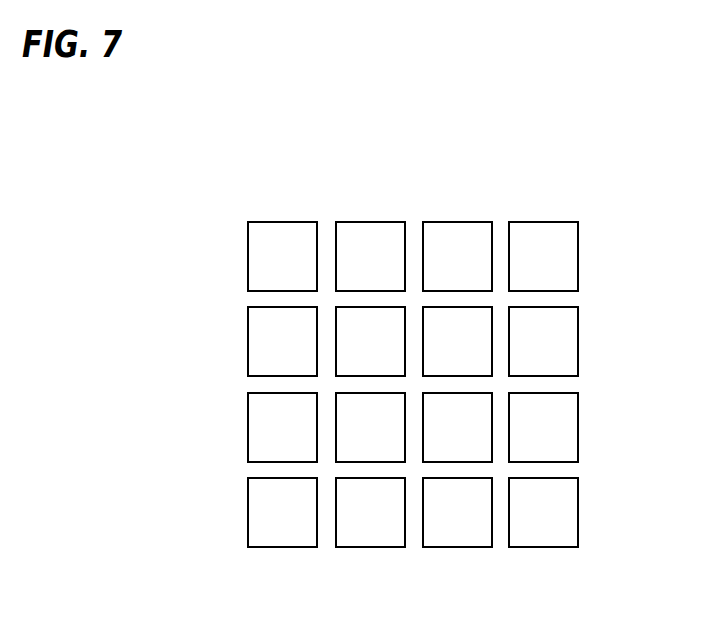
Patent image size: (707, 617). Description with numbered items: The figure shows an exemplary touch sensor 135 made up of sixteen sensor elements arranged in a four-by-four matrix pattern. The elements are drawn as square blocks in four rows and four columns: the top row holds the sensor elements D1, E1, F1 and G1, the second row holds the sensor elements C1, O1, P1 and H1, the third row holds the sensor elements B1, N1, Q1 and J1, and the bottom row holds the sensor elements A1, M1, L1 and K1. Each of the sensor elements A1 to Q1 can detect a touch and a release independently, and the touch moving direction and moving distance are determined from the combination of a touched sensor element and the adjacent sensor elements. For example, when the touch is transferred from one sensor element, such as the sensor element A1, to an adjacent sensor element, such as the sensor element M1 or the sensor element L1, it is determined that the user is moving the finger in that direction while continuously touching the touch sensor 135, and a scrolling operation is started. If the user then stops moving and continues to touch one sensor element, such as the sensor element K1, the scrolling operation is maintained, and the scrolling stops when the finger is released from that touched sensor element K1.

The touch sensor 135 is at (425, 357).
The sensor element A1 is at (257, 512).
The sensor element B1 is at (257, 427).
The sensor element C1 is at (257, 341).
The sensor element D1 is at (257, 256).
The sensor element E1 is at (370, 232).
The sensor element F1 is at (457, 232).
The sensor element G1 is at (568, 256).
The sensor element H1 is at (569, 341).
The sensor element J1 is at (567, 427).
The sensor element K1 is at (569, 512).
The sensor element L1 is at (457, 533).
The sensor element M1 is at (370, 533).
The sensor element N1 is at (370, 427).
The sensor element O1 is at (370, 341).
The sensor element P1 is at (457, 341).
The sensor element Q1 is at (457, 427).